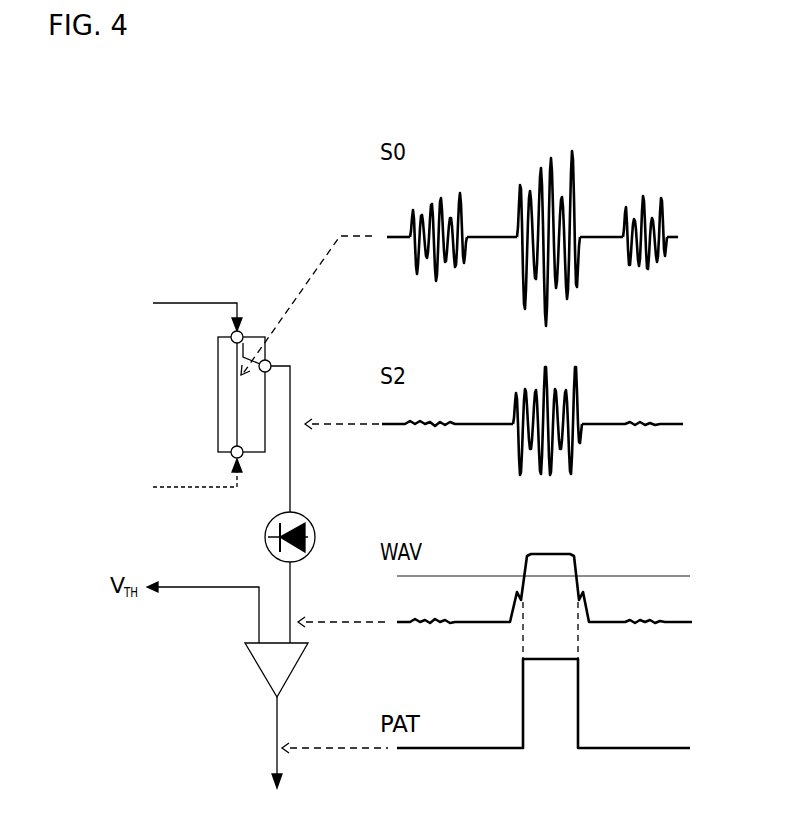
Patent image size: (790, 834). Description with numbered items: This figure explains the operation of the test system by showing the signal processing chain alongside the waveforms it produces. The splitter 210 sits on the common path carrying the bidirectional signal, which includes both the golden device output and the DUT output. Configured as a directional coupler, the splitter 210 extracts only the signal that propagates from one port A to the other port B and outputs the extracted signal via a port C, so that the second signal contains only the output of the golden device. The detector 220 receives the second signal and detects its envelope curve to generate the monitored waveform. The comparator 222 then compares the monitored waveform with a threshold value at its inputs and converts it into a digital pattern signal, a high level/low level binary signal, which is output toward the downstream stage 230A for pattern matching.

The splitter 210 is at (217, 388).
The detector 220 is at (306, 517).
The comparator 222 is at (297, 662).
The output pattern signal 230A is at (282, 757).
The port A is at (243, 333).
The port B is at (247, 457).
The port C is at (272, 363).